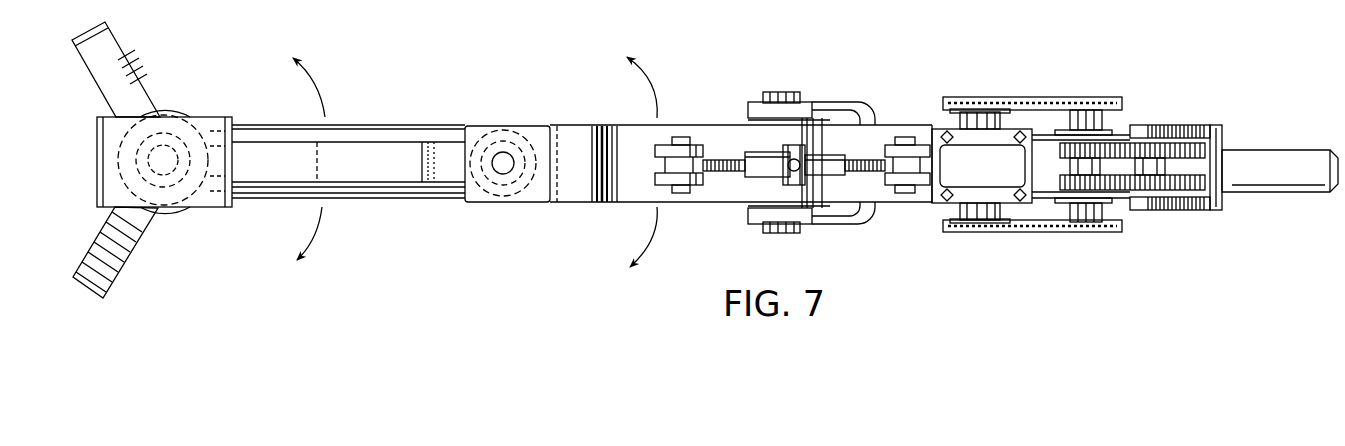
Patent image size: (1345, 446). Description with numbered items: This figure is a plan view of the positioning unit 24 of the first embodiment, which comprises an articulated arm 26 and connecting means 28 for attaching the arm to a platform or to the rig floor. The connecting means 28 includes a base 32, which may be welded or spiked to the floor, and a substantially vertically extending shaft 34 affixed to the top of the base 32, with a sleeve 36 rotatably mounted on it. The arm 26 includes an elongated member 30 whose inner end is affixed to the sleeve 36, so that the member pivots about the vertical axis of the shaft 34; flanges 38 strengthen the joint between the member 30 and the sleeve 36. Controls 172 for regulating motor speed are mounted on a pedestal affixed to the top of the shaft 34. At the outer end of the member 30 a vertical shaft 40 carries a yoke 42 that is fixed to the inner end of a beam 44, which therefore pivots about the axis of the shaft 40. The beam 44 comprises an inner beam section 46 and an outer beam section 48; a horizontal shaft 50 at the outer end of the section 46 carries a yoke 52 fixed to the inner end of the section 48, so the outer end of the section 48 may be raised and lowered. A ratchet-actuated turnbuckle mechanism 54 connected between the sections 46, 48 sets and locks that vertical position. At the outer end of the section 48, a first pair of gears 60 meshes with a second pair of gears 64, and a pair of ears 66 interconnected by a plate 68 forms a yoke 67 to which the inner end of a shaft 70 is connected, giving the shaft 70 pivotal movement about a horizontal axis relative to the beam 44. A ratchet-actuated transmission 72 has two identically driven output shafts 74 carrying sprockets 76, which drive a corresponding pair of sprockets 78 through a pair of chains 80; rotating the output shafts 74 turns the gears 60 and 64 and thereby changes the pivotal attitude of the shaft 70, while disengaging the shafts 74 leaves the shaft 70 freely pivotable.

The positioning unit 24 is at (467, 70).
The articulated arm 26 is at (357, 77).
The connecting means 28 is at (176, 164).
The elongated member 30 is at (348, 157).
The base 32 is at (135, 72).
The shaft 34 is at (175, 197).
The sleeve 36 is at (176, 110).
The flanges 38 is at (385, 163).
The shaft 40 is at (503, 160).
The yoke 42 is at (583, 138).
The beam 44 is at (572, 230).
The inner beam section 46 is at (720, 135).
The outer beam section 48 is at (877, 135).
The shaft 50 is at (765, 92).
The yoke 52 is at (811, 154).
The ratchet-actuated turnbuckle mechanism 54 is at (747, 177).
The first pair of gears 60 is at (1132, 165).
The second pair of gears 64 is at (1160, 150).
The ears 66 is at (1152, 125).
The yoke 67 is at (1196, 156).
The plate 68 is at (1222, 146).
The shaft 70 is at (1268, 160).
The ratchet-actuated transmission 72 is at (900, 213).
The output shafts 74 is at (982, 166).
The sprockets 76 is at (960, 112).
The sprockets 78 is at (1092, 118).
The chains 80 is at (1040, 97).
The controls 172 is at (207, 105).